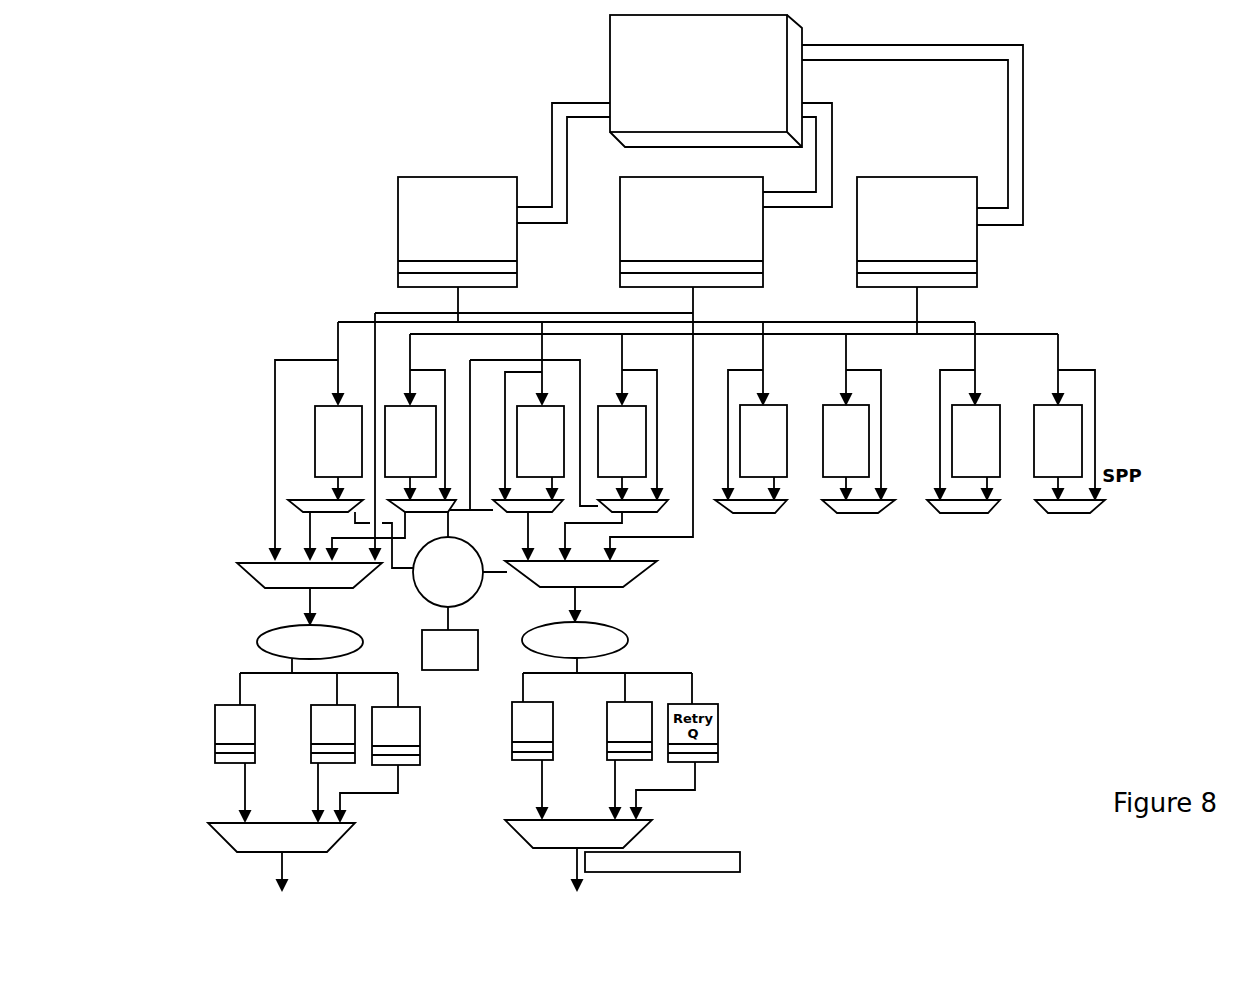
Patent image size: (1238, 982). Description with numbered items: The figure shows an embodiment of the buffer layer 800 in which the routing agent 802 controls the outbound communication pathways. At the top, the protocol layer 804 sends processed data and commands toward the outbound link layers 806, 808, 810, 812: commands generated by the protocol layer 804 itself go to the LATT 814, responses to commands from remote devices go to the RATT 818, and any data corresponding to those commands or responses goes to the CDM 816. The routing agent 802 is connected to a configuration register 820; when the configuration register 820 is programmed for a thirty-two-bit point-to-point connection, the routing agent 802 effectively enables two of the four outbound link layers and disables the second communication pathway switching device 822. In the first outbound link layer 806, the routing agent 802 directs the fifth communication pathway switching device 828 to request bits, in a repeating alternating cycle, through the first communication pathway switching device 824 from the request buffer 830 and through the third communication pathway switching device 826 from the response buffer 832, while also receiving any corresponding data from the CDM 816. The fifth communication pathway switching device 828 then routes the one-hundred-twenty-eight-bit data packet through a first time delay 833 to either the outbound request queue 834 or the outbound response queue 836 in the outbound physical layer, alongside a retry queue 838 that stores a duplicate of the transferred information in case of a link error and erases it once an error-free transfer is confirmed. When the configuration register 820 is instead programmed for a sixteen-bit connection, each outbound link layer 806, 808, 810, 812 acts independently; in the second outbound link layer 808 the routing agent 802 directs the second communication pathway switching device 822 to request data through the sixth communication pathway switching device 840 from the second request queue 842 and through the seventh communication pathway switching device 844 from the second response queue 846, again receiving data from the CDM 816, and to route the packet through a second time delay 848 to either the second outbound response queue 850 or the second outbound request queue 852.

The buffer layer 800 is at (1098, 195).
The routing agent 802 is at (460, 583).
The protocol layer 804 is at (770, 120).
The first outbound link layer 806 is at (281, 870).
The second outbound link layer 808 is at (622, 869).
The third outbound link layer 810 is at (829, 735).
The fourth outbound link layer 812 is at (982, 736).
The LATT 814 is at (457, 249).
The CDM 816 is at (684, 369).
The RATT 818 is at (917, 255).
The configuration register 820 is at (450, 650).
The second communication pathway switching device 822 is at (581, 592).
The first communication pathway switching device 824 is at (350, 534).
The third communication pathway switching device 826 is at (391, 530).
The fifth communication pathway switching device 828 is at (309, 594).
The request buffer 830 is at (338, 411).
The response buffer 832 is at (418, 417).
The first time delay 833 is at (319, 664).
The outbound request queue 834 is at (227, 755).
The outbound response queue 836 is at (324, 755).
The retry queue 838 is at (377, 755).
The sixth communication pathway switching device 840 is at (528, 530).
The second request queue 842 is at (532, 411).
The seventh communication pathway switching device 844 is at (614, 530).
The second response queue 846 is at (631, 417).
The second time delay 848 is at (607, 662).
The second outbound response queue 850 is at (616, 754).
The second outbound request queue 852 is at (522, 754).